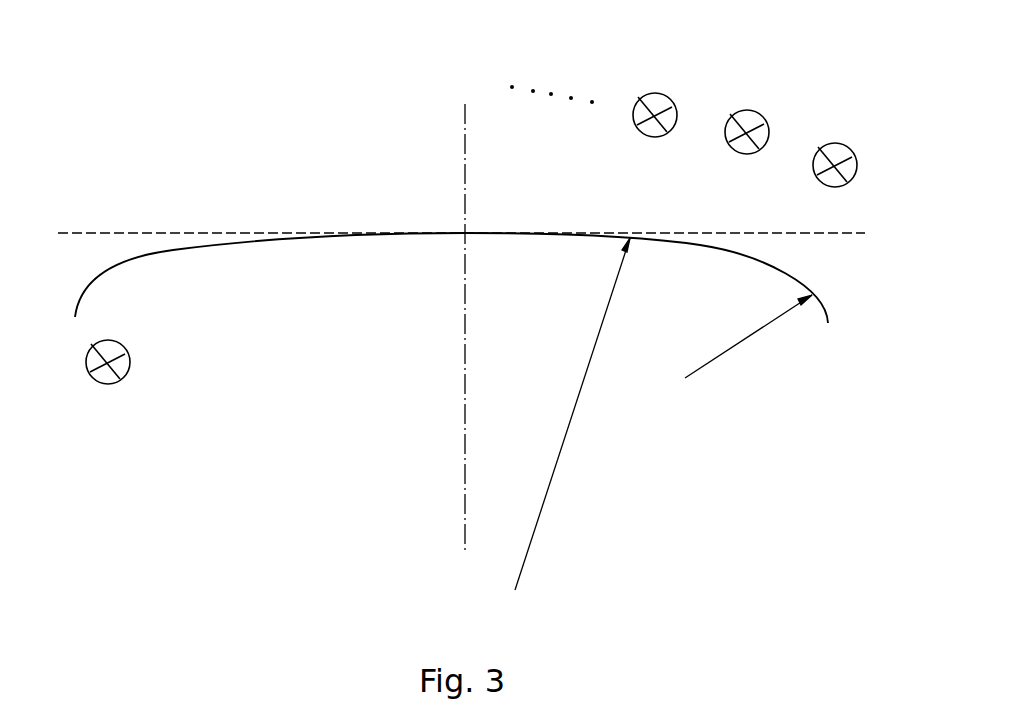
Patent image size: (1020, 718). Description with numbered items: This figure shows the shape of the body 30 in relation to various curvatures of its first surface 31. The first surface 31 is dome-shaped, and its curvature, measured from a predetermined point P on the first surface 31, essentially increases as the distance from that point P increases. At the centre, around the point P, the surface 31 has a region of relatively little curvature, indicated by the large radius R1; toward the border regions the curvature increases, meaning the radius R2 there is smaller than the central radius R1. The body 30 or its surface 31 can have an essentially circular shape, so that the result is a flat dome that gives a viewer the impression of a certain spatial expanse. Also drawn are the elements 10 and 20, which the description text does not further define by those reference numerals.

The light source 10 is at (107, 385).
The light sources 20 is at (664, 95).
The body 30 is at (248, 207).
The first surface 31 is at (177, 250).
The predetermined point P is at (472, 225).
The radius of the central region R1 is at (555, 414).
The radius of the border region R2 is at (739, 336).